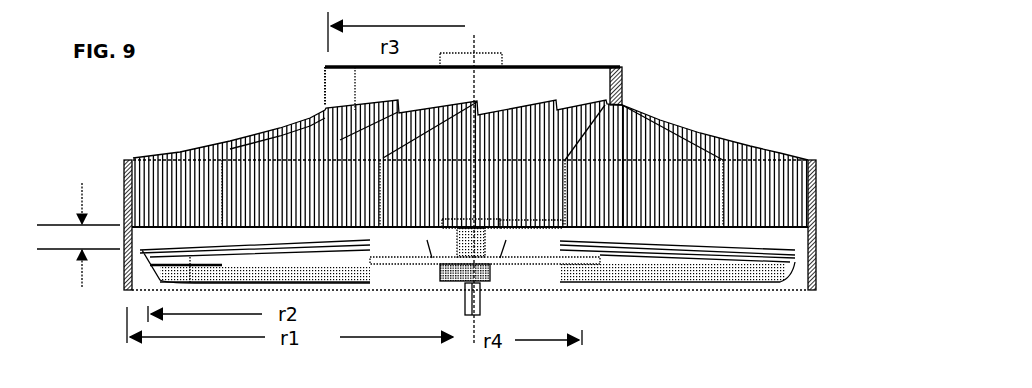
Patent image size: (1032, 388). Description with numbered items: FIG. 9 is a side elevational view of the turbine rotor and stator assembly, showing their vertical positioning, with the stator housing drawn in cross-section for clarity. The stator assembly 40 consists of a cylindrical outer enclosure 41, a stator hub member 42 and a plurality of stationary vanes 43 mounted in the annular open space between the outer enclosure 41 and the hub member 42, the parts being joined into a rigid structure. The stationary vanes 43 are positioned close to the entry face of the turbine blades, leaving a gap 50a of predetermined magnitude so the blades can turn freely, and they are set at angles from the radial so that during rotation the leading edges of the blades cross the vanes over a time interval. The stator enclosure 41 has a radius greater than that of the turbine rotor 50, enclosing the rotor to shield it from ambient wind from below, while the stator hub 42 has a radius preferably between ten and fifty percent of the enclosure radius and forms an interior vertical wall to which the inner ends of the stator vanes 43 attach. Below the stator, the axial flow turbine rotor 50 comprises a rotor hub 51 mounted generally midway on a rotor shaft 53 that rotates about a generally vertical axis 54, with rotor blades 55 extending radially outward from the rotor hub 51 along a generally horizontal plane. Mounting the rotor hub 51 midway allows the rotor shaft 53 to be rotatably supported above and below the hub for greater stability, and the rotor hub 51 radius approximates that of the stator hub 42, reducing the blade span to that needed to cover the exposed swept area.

The stator assembly 40 is at (505, 171).
The cylindrical outer enclosure 41 is at (818, 213).
The stator hub member 42 is at (610, 85).
The stationary vanes 43 is at (233, 150).
The axial flow turbine rotor 50 is at (518, 190).
The gap 50a is at (50, 230).
The rotor hub 51 is at (518, 263).
The rotor shaft 53 is at (480, 300).
The vertical axis 54 is at (468, 333).
The rotor blades 55 is at (668, 272).